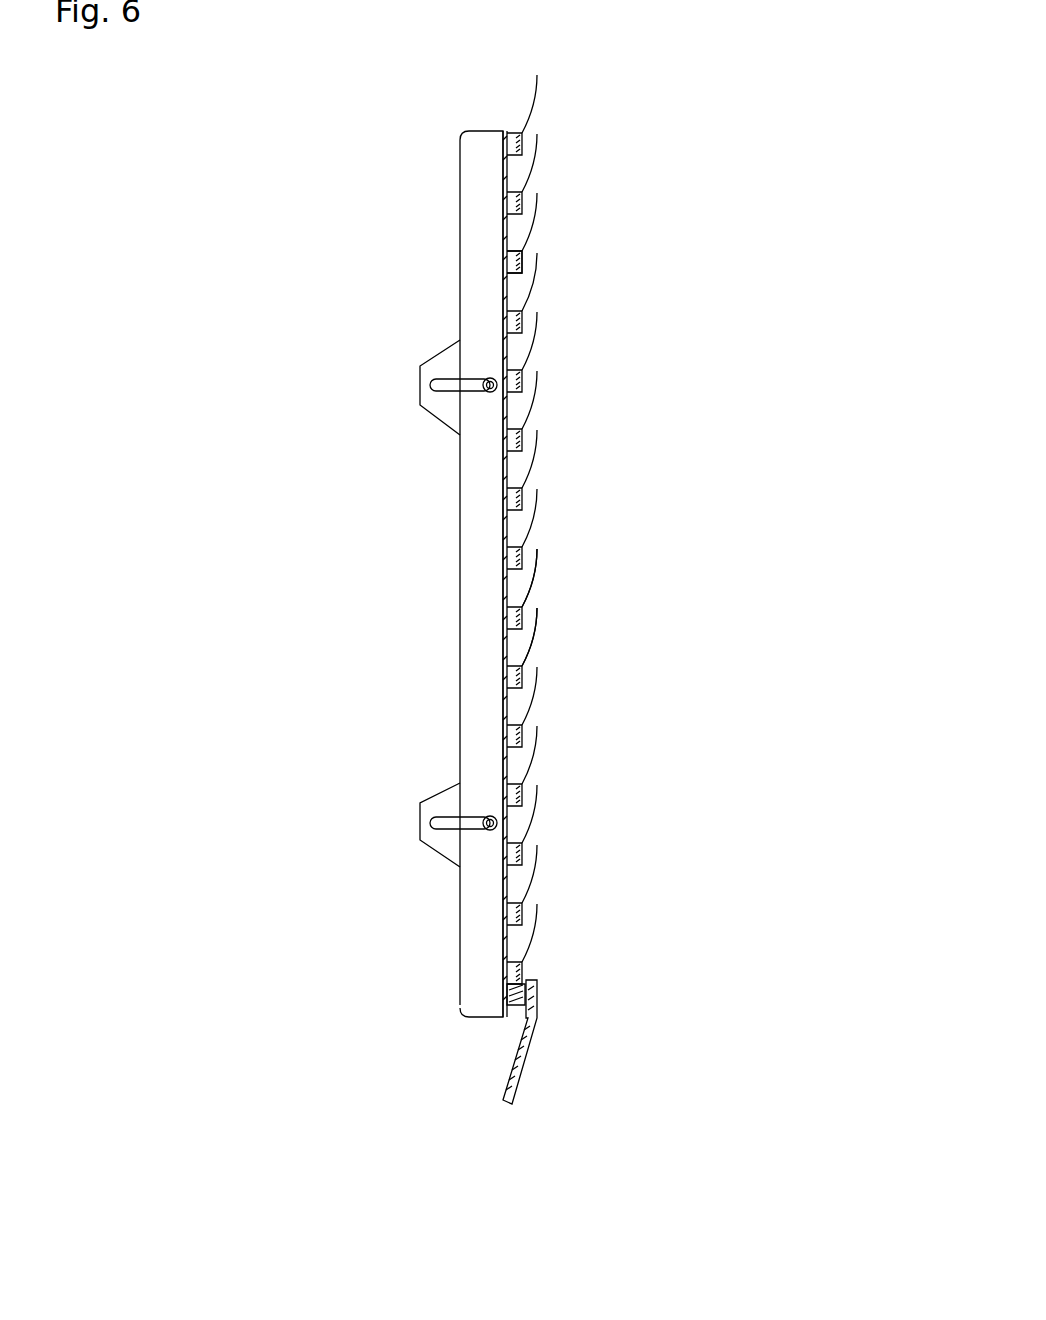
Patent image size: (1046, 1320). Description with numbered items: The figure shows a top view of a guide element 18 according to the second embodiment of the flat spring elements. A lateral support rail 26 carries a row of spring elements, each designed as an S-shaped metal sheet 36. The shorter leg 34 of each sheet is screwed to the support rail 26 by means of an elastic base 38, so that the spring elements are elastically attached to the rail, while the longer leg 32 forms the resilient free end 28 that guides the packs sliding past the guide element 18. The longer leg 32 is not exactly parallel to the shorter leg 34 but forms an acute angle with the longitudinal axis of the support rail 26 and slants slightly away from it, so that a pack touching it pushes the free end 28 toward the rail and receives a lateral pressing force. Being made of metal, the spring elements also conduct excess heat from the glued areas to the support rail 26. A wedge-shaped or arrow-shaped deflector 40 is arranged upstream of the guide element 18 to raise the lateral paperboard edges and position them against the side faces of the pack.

The guide element 18 is at (682, 440).
The support rail 26 is at (478, 533).
The free end 28 is at (540, 320).
The longer leg 32 is at (538, 393).
The shorter leg 34 is at (512, 437).
The S-shaped metal sheet 36 is at (550, 688).
The elastic base 38 is at (513, 265).
The deflector 40 is at (494, 1118).